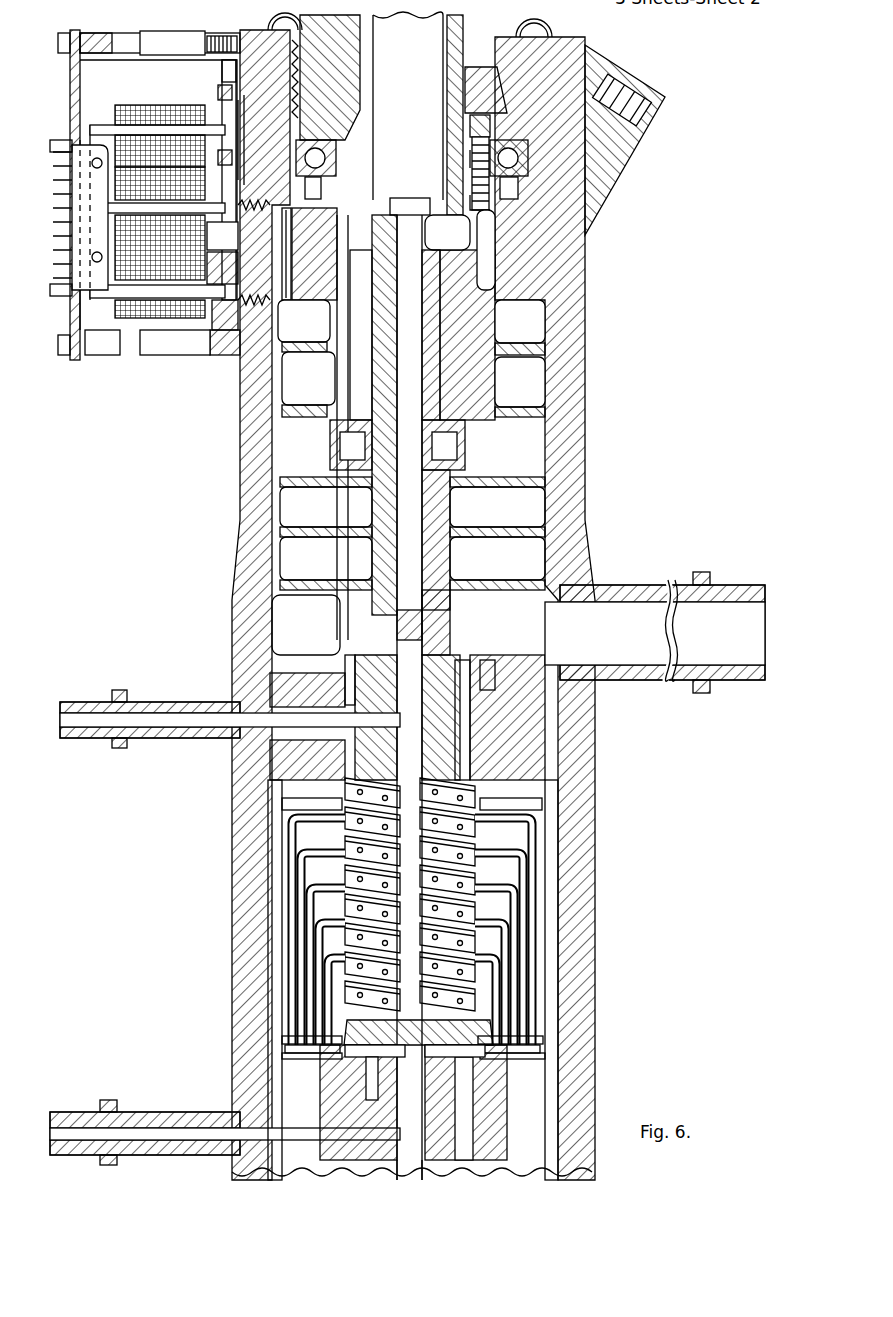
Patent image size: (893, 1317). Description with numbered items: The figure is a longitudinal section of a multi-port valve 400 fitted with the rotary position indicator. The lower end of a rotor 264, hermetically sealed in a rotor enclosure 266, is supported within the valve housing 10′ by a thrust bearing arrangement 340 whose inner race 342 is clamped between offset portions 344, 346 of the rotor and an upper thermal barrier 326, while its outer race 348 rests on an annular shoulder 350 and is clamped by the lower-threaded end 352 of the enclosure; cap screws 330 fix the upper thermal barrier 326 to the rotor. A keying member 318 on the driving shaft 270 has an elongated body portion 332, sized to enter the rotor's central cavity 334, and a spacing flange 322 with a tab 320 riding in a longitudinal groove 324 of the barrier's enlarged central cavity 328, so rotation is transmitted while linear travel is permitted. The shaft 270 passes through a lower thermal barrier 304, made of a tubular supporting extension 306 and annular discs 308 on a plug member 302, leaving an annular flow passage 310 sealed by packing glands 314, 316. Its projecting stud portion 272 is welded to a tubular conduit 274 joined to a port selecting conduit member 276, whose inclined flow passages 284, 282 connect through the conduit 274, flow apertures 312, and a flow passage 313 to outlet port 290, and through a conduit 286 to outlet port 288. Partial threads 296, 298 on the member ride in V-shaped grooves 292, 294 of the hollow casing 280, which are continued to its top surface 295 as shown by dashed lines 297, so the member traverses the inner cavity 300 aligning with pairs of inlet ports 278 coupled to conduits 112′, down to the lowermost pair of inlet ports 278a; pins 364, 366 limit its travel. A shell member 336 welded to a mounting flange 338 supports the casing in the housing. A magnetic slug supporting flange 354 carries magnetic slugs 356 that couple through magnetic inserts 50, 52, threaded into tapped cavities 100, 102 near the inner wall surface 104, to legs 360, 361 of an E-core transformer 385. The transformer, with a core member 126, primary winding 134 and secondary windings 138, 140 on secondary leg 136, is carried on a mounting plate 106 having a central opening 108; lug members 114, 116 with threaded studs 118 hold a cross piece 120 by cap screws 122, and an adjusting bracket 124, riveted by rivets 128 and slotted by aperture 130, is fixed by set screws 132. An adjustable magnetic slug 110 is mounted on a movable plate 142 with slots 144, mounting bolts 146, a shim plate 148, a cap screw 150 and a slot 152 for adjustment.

The valve housing 10′ is at (626, 323).
The multi-port valve 400 is at (636, 445).
The rotor enclosure 266 is at (280, 12).
The rotor 264 is at (590, 19).
The lower-threaded end 352 is at (322, 128).
The shim plate 148 is at (240, 142).
The slots 144 is at (243, 99).
The cap screws 330 is at (478, 118).
The central cavity 334 is at (500, 89).
The offset portion 344 is at (472, 139).
The inner race 342 is at (470, 153).
The offset portion 346 is at (480, 197).
The thrust bearing arrangement 340 is at (574, 142).
The outer race 348 is at (519, 158).
The annular shoulder 350 is at (519, 181).
The driving shaft 270 is at (415, 503).
The magnetic insert 50 is at (291, 253).
The magnetic slug supporting flange 354 is at (291, 228).
The magnetic slugs 356 is at (290, 212).
The longitudinal groove 324 is at (337, 370).
The inner wall surface 104 is at (327, 331).
The tapped cavity 102 is at (279, 316).
The tab 320 is at (333, 426).
The packing gland 314 is at (340, 446).
The annular discs 308 is at (345, 520).
The plug member 302 is at (326, 638).
The elongated body portion 332 is at (468, 273).
The keying member 318 is at (476, 301).
The central cavity 328 is at (497, 323).
The upper thermal barrier 326 is at (540, 342).
The spacing flange 322 is at (478, 400).
The thermal barrier 304 is at (502, 562).
The annular flow passage 310 is at (430, 603).
The tubular supporting extension 306 is at (450, 624).
The projecting stud portion 272 is at (455, 644).
The dashed lines 297 is at (492, 676).
The packing gland 316 is at (470, 723).
The tubular conduit 274 is at (470, 743).
The flow passage 313 is at (345, 658).
The flow apertures 312 is at (378, 658).
The top surface 295 is at (325, 671).
The pin 364 is at (345, 763).
The outlet port 290 is at (176, 740).
The outlet port 288 is at (128, 1112).
The mounting flange 338 is at (560, 733).
The shell member 336 is at (270, 781).
The inlet ports 278 is at (505, 784).
The conduits 112′ is at (300, 811).
The hollow casing 280 is at (520, 836).
The inner cavity 300 is at (520, 891).
The V-shaped groove 294 is at (300, 966).
The V-shaped groove 292 is at (535, 963).
The partial threads 296 is at (300, 1038).
The lowermost pair of inlet ports 278a is at (300, 1038).
The partial threads 298 is at (300, 1034).
The inclined flow passage 284 is at (493, 1030).
The inclined flow passage 282 is at (362, 1102).
The pin 366 is at (366, 1093).
The port selecting conduit member 276 is at (467, 1102).
The conduit 286 is at (400, 1178).
The cross piece 120 is at (70, 75).
The cap screws 122 is at (62, 34).
The lug member 114 is at (152, 38).
The mounting plate 106 is at (226, 42).
The threaded studs 118 is at (207, 43).
The core member 126 is at (98, 120).
The adjustable magnetic slug 110 is at (222, 128).
The movable plate 142 is at (222, 76).
The mounting bolts 146 is at (218, 90).
The secondary winding 140 is at (122, 122).
The secondary leg 136 is at (150, 116).
The cap screw 150 is at (210, 166).
The slot 152 is at (210, 184).
The central leg 360 is at (125, 208).
The secondary winding 138 is at (158, 320).
The secondary leg 361 is at (90, 295).
The E-core transformer 385 is at (72, 128).
The adjusting bracket 124 is at (72, 183).
The aperture 130 is at (72, 238).
The set screws 132 is at (50, 144).
The rivets 128 is at (92, 161).
The tapped cavity 100 is at (222, 237).
The central opening 108 is at (222, 268).
The magnetic insert 52 is at (225, 316).
The primary winding 134 is at (112, 348).
The lug member 116 is at (172, 355).